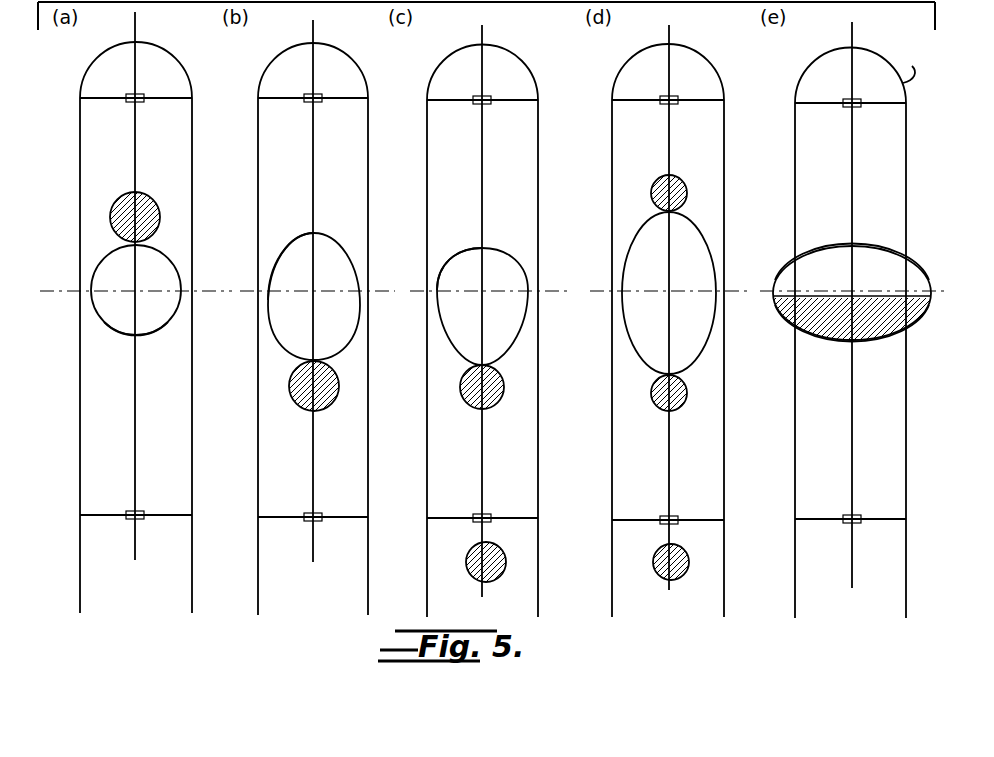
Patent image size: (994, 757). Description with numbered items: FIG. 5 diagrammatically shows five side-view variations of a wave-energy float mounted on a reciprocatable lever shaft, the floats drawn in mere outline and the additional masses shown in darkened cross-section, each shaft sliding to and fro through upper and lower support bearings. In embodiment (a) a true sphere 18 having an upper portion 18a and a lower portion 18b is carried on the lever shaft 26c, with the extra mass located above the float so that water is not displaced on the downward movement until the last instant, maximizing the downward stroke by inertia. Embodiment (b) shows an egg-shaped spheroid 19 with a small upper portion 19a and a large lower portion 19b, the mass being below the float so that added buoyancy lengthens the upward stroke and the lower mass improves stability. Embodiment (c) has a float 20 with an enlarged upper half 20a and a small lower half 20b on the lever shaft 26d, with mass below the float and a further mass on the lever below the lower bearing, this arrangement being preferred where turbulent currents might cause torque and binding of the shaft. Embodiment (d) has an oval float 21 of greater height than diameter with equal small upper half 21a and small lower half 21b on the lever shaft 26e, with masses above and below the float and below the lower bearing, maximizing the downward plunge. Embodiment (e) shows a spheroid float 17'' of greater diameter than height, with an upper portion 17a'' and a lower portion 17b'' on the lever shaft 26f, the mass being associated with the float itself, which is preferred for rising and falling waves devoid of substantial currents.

The spheroid float 17'' is at (852, 266).
The upper portion 17a'' is at (852, 236).
The lower portion 17b'' is at (852, 346).
The true sphere 18 is at (167, 257).
The upper portion 18a is at (97, 270).
The lower portion 18b is at (118, 332).
The egg-shaped spheroid 19 is at (342, 250).
The small upper portion 19a is at (284, 252).
The large lower portion 19b is at (283, 360).
The float 20 is at (505, 255).
The enlarged upper half 20a is at (455, 252).
The small lower half 20b is at (458, 360).
The oval-shaped float 21 is at (702, 238).
The small upper half 21a is at (634, 240).
The small lower half 21b is at (654, 370).
The lever shaft 26c is at (135, 150).
The lever shaft 26d is at (313, 148).
The lever shaft 26e is at (669, 152).
The lever shaft 26f is at (852, 150).